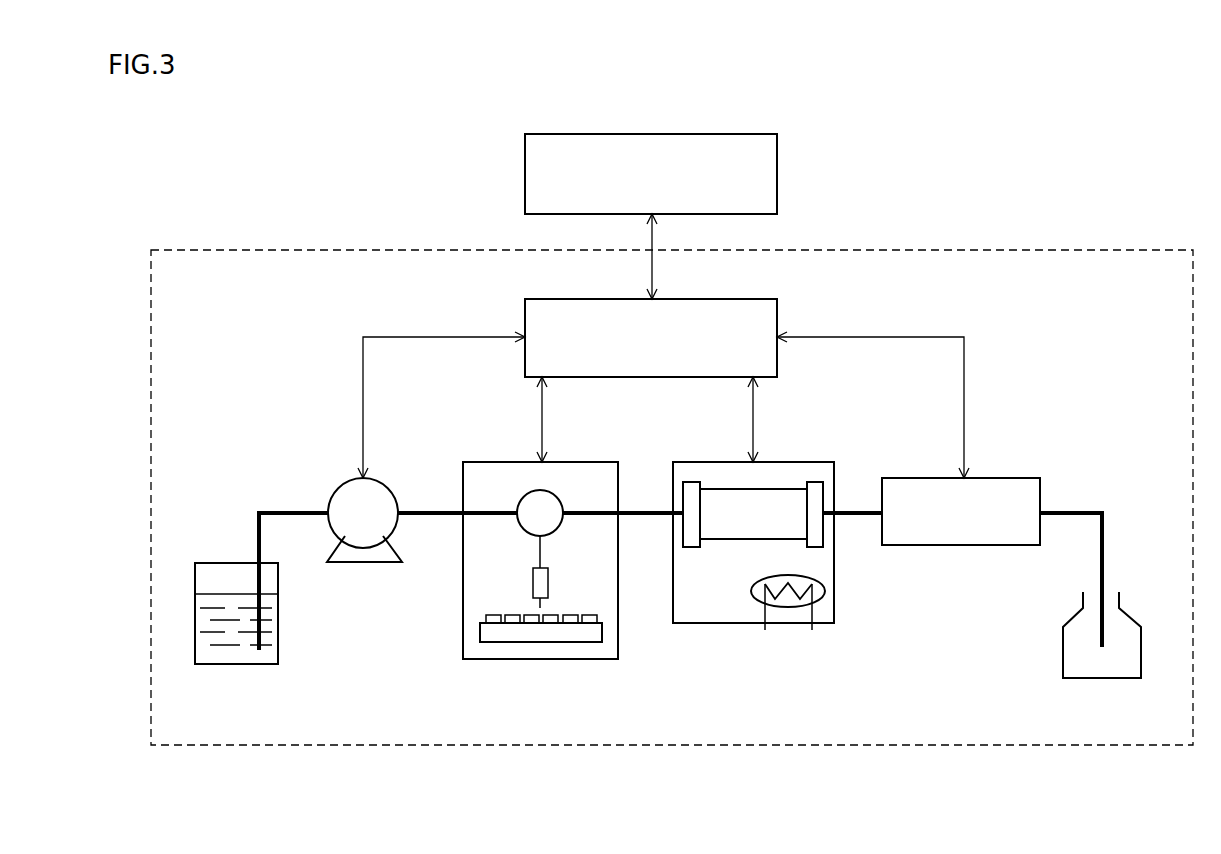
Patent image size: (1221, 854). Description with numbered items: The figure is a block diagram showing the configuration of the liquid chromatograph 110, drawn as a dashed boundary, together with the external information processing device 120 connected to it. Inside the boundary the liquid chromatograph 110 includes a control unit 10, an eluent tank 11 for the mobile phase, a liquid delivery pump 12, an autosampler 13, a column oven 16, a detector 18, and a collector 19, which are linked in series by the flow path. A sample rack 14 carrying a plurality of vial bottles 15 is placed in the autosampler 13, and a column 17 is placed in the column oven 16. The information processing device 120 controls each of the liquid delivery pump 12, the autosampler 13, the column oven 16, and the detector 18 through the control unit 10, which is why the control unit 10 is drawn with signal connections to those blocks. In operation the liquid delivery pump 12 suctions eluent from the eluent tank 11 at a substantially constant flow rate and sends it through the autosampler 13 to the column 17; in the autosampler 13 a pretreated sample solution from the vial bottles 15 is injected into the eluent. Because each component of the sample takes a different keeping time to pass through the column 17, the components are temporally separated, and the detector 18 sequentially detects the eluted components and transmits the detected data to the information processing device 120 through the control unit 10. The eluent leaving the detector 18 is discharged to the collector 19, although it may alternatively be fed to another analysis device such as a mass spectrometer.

The control unit 10 is at (717, 299).
The eluent tank 11 is at (218, 563).
The liquid delivery pump 12 is at (366, 570).
The autosampler 13 is at (570, 462).
The sample rack 14 is at (505, 642).
The vial bottles 15 is at (590, 615).
The column oven 16 is at (785, 462).
The column 17 is at (793, 540).
The detector 18 is at (990, 478).
The collector 19 is at (1102, 680).
The liquid chromatograph 110 is at (1110, 250).
The information processing device 120 is at (717, 134).